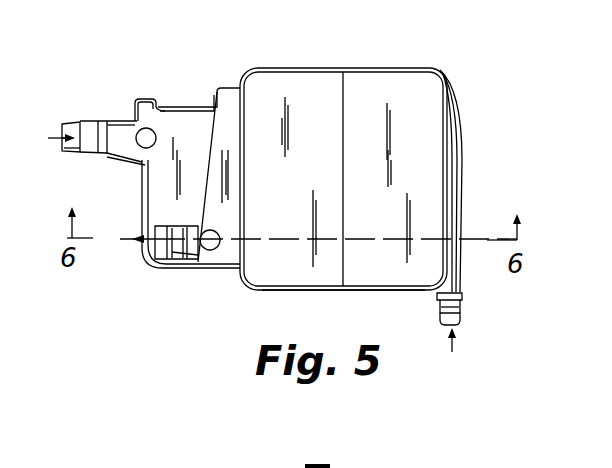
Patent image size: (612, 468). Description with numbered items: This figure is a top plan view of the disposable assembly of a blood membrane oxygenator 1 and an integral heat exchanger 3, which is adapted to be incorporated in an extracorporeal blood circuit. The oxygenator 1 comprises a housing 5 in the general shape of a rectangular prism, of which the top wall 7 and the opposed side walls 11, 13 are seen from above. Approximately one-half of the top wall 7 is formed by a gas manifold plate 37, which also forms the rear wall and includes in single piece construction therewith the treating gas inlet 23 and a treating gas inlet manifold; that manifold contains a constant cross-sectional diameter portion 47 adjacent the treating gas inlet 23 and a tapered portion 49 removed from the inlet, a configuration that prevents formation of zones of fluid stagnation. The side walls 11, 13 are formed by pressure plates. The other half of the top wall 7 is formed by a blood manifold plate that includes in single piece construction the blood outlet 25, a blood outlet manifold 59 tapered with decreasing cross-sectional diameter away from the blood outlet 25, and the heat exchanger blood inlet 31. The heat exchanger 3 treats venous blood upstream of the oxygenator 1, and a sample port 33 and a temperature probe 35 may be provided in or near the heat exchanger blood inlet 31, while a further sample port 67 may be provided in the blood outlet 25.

The blood membrane oxygenator 1 is at (287, 179).
The integral heat exchanger 3 is at (191, 97).
The housing 5 is at (250, 62).
The top wall 7 is at (435, 138).
The side wall 11 is at (312, 297).
The side wall 13 is at (342, 60).
The treating gas inlet 23 is at (460, 310).
The blood outlet 25 is at (176, 258).
The heat exchanger blood inlet 31 is at (87, 127).
The sample port 33 is at (145, 142).
The temperature probe 35 is at (137, 99).
The gas manifold plate 37 is at (435, 97).
The constant cross-sectional diameter portion 47 is at (460, 277).
The tapered portion 49 is at (458, 193).
The blood outlet manifold 59 is at (230, 192).
The sample port 67 is at (210, 250).